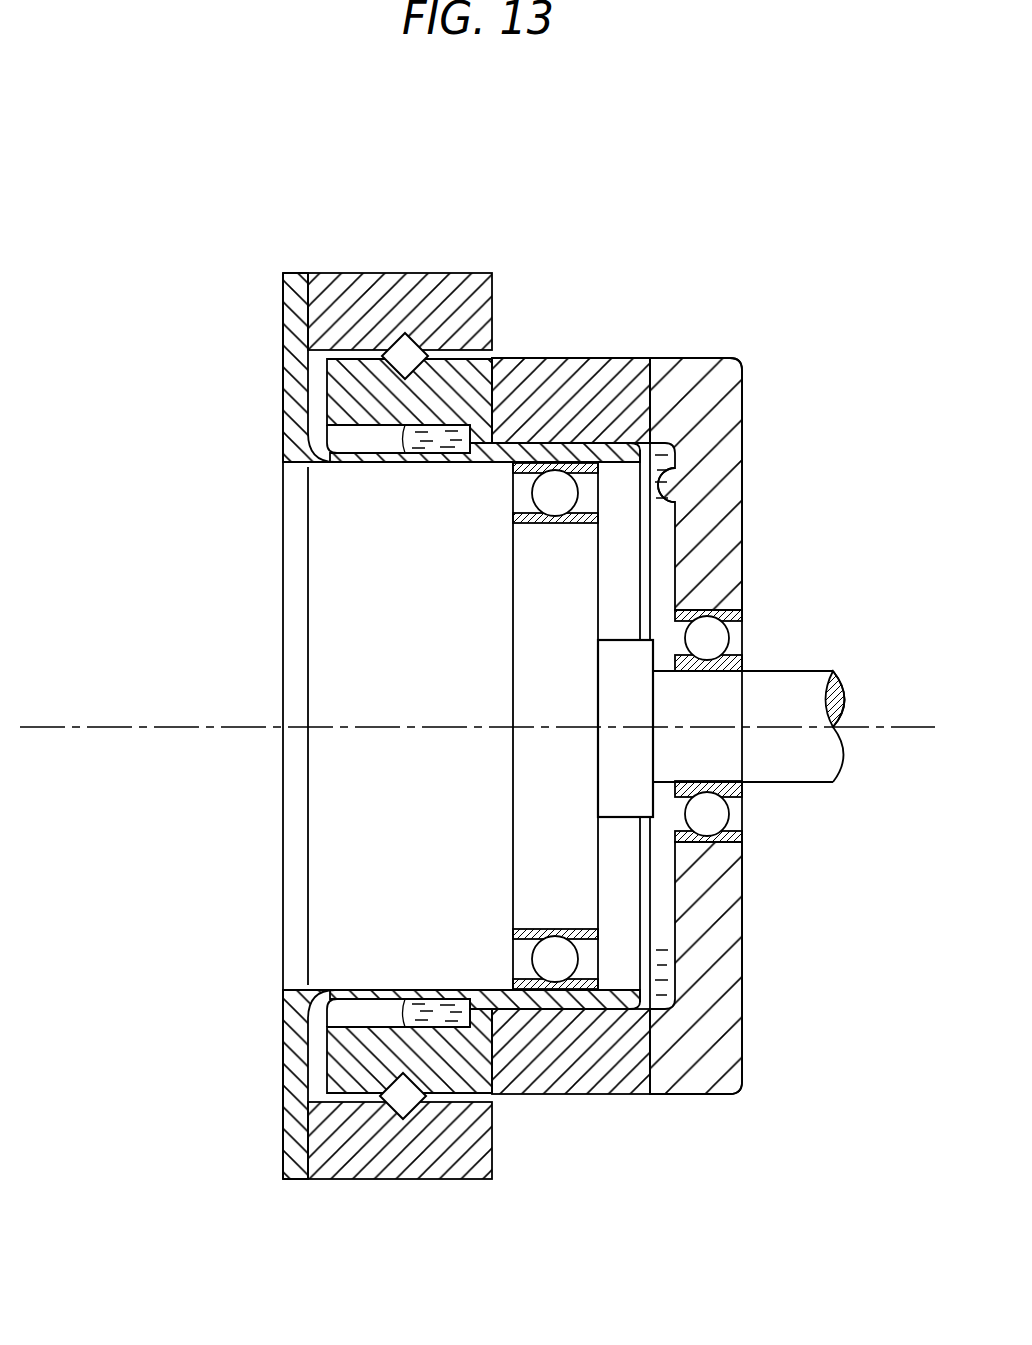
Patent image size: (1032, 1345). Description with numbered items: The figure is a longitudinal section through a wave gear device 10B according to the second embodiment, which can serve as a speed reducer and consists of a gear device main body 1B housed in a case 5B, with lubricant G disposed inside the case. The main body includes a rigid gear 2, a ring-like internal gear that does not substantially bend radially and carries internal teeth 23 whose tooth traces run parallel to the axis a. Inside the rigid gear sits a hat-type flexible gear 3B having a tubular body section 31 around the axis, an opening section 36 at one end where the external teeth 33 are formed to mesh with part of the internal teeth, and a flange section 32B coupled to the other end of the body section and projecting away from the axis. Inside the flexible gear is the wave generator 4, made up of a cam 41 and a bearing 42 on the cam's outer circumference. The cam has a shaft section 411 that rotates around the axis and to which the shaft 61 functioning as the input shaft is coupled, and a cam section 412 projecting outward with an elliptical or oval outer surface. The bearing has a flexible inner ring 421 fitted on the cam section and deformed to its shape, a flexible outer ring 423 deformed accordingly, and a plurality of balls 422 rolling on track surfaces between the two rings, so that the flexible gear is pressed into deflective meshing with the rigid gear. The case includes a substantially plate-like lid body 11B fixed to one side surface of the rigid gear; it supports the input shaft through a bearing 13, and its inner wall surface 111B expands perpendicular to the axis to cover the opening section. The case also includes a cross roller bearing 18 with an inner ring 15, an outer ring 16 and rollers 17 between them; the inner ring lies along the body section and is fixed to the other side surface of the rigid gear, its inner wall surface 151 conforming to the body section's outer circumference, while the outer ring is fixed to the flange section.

The gear device 10B is at (682, 587).
The cross roller bearing 18 is at (330, 706).
The rollers 17 is at (405, 343).
The outer ring 16 is at (340, 320).
The inner ring 15 is at (345, 388).
The inner wall surface 151 is at (375, 1008).
The flange section 32B is at (297, 1114).
The external teeth 33 is at (527, 443).
The body section 31 is at (420, 1002).
The opening section 36 is at (642, 530).
The internal teeth 23 is at (549, 462).
The rigid gear 2 is at (571, 670).
The case 5B is at (761, 686).
The lid body 11B is at (728, 403).
The inner wall surface 111B is at (660, 480).
The flexible gear 3B is at (496, 749).
The gear device main body 1B is at (262, 565).
The wave generator 4 is at (711, 882).
The cam 41 is at (711, 726).
The shaft section 411 is at (633, 797).
The cam section 412 is at (578, 868).
The bearing 42 is at (605, 882).
The inner ring 421 is at (583, 988).
The balls 422 is at (557, 968).
The outer ring 423 is at (528, 991).
The bearing 13 is at (735, 621).
The shaft 61 is at (793, 684).
The axis a is at (892, 727).
The lubricant G is at (670, 968).